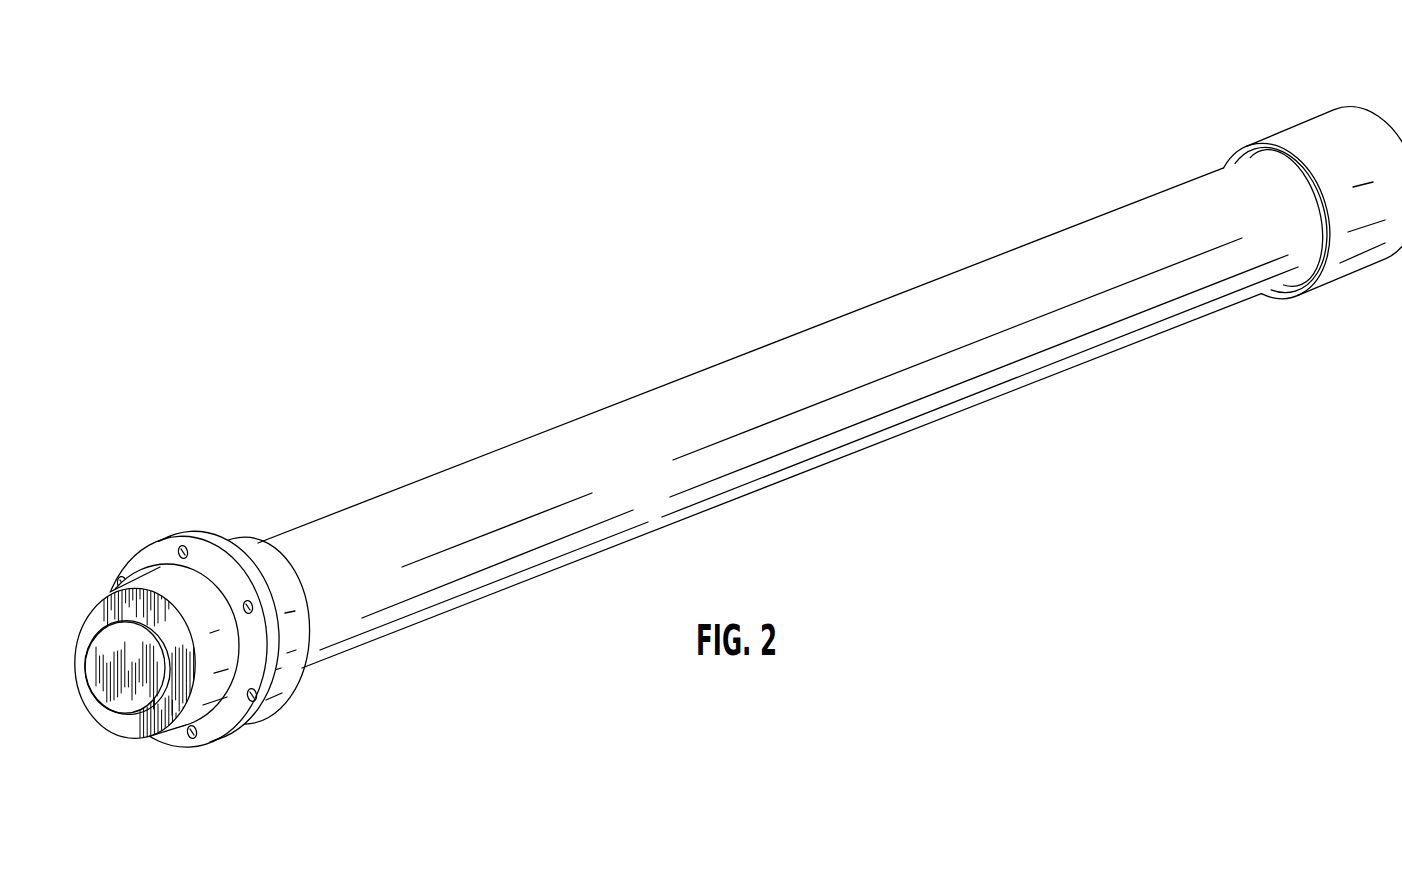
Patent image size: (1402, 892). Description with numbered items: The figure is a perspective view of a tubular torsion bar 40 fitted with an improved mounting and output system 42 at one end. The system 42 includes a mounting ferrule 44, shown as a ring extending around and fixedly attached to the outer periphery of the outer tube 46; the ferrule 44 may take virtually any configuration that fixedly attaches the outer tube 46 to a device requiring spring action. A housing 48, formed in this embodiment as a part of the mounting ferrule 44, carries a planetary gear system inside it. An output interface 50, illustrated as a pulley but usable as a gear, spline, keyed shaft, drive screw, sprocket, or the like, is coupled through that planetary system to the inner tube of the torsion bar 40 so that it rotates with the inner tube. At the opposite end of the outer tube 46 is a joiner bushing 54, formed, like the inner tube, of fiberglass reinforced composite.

The tubular torsion bar 40 is at (732, 430).
The mounting and output system 42 is at (186, 609).
The mounting ferrule 44 is at (226, 738).
The outer tube 46 is at (796, 335).
The housing 48 is at (150, 649).
The output interface 50 is at (116, 700).
The joiner bushing 54 is at (1300, 133).